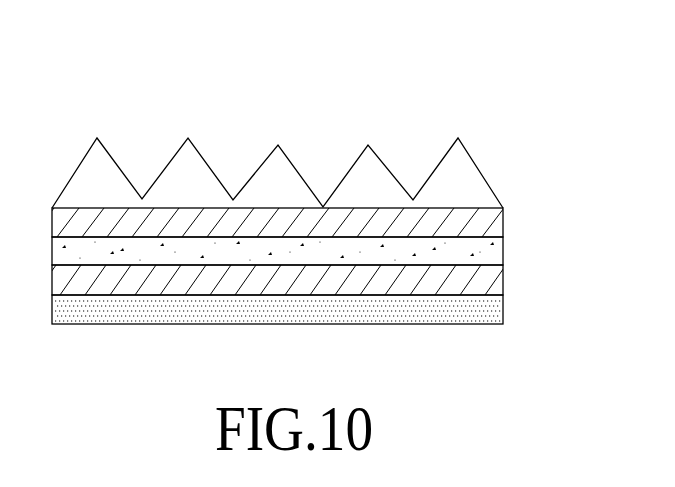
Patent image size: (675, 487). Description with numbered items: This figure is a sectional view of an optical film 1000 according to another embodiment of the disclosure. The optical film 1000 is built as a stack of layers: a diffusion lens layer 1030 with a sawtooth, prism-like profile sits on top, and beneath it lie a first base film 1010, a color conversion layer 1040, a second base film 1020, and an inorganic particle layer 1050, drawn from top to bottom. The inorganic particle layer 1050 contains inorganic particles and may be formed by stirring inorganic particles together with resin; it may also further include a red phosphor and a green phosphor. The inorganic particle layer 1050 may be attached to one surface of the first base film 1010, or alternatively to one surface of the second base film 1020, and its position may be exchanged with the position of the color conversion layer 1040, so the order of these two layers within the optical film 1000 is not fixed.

The optical film 1000 is at (305, 32).
The diffusion lens layer 1030 is at (503, 120).
The first base film 1010 is at (497, 220).
The color conversion layer 1040 is at (497, 249).
The second base film 1020 is at (497, 283).
The inorganic particle layer 1050 is at (497, 310).